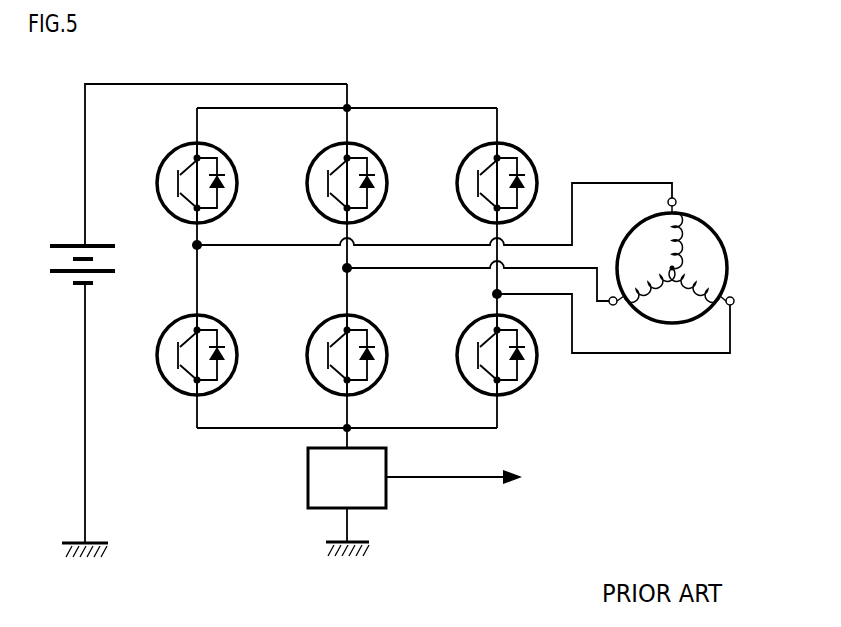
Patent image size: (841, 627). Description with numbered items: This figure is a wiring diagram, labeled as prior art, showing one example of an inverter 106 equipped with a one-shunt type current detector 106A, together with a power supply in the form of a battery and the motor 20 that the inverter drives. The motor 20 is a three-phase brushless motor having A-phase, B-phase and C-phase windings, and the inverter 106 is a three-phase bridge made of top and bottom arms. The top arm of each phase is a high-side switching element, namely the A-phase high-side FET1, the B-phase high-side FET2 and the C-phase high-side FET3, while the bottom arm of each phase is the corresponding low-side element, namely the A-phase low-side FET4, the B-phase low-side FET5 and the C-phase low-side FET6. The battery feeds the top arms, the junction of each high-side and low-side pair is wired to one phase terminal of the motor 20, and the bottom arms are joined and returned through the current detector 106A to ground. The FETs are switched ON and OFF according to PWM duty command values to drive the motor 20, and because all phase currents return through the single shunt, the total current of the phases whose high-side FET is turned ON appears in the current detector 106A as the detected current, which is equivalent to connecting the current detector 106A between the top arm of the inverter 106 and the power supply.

The inverter 106 is at (536, 120).
The current detector 106A is at (308, 460).
The motor 20 is at (698, 215).
The A-phase high-side FET FET1 is at (182, 179).
The B-phase high-side FET FET2 is at (332, 179).
The C-phase high-side FET FET3 is at (482, 179).
The A-phase low-side FET FET4 is at (182, 362).
The B-phase low-side FET FET5 is at (332, 362).
The C-phase low-side FET FET6 is at (482, 362).